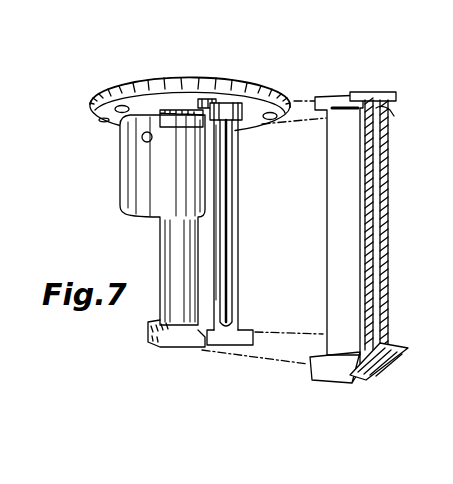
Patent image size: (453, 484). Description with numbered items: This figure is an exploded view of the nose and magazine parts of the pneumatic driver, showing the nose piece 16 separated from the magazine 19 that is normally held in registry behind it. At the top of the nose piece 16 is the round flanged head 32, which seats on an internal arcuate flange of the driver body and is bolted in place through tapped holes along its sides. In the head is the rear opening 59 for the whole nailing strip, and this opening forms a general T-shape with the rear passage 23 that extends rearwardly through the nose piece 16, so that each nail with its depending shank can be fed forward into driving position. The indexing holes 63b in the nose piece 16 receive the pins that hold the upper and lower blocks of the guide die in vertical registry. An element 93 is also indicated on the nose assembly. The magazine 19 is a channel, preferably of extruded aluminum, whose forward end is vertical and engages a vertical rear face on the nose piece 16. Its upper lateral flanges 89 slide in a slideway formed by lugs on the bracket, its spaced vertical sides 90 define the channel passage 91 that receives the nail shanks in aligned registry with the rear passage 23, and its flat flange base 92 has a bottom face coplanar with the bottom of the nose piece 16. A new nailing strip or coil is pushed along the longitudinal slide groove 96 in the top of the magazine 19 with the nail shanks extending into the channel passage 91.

The round flanged head 32 is at (128, 95).
The rear opening 59 is at (212, 98).
The indexing holes 63b is at (142, 136).
The nose piece 16 is at (140, 190).
The guide rod 93 is at (222, 244).
The rear passage 23 is at (232, 249).
The magazine 19 is at (343, 260).
The upper lateral flanges 89 is at (398, 98).
The longitudinal slide groove 96 is at (384, 113).
The vertical sides 90 is at (360, 210).
The channel passage 91 is at (376, 238).
The flat flange base 92 is at (372, 362).